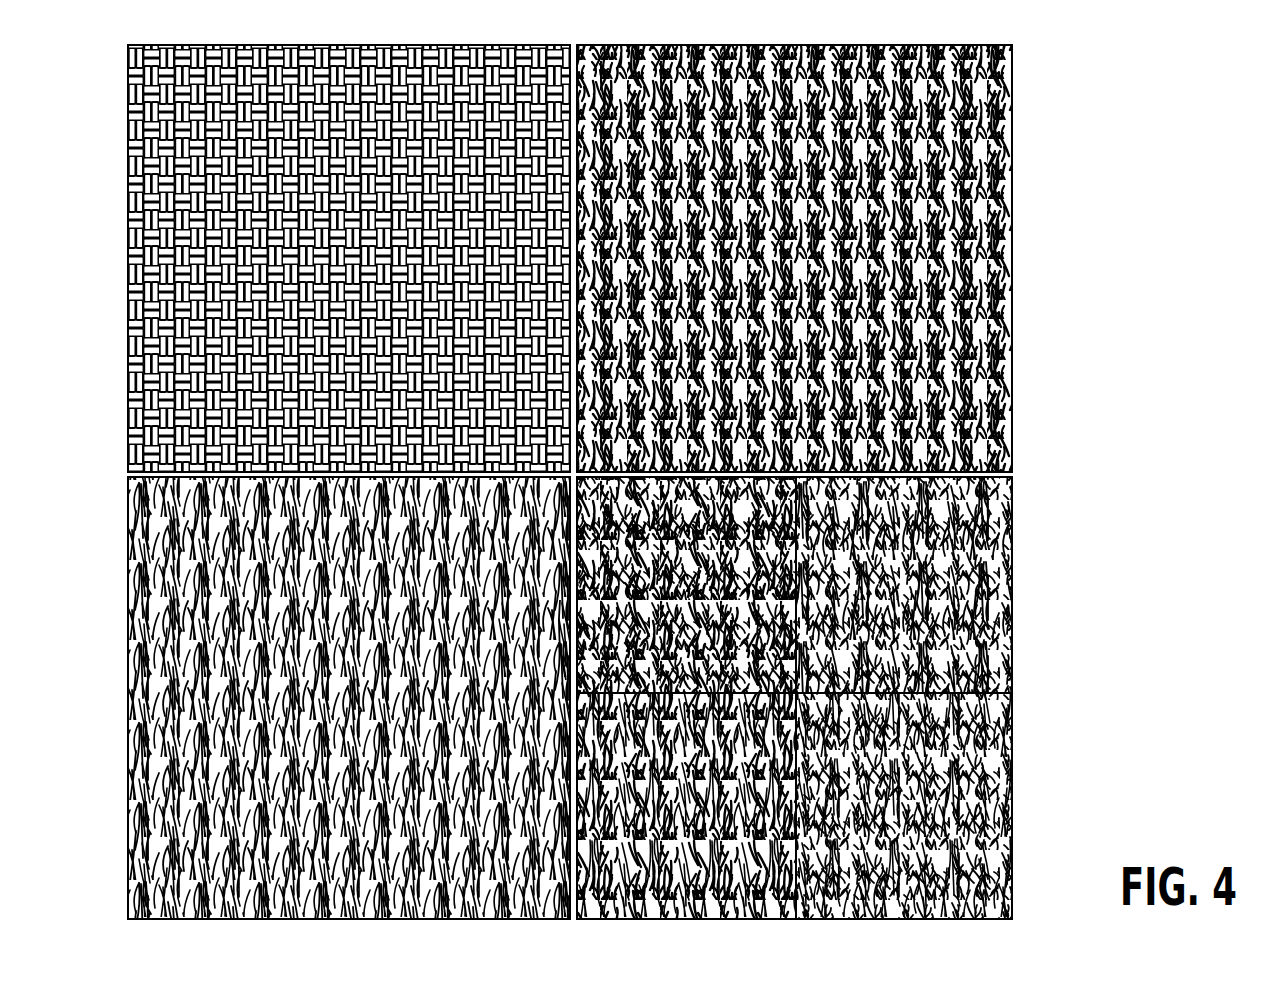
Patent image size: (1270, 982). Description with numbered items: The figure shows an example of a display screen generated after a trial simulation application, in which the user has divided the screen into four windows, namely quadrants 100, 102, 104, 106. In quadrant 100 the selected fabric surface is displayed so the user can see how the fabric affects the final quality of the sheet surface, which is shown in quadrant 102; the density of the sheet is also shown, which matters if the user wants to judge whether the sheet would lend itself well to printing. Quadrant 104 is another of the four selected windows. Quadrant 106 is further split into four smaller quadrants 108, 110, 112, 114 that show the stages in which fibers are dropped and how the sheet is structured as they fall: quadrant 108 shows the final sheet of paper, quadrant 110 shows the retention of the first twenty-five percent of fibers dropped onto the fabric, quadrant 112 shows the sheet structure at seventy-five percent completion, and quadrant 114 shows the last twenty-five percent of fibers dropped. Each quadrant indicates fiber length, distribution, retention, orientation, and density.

The quadrant 100 is at (128, 183).
The quadrant 102 is at (1012, 178).
The quadrant 104 is at (128, 670).
The quadrant 106 is at (835, 712).
The quadrant 108 is at (572, 625).
The quadrant 110 is at (963, 590).
The quadrant 112 is at (740, 920).
The quadrant 114 is at (1012, 818).